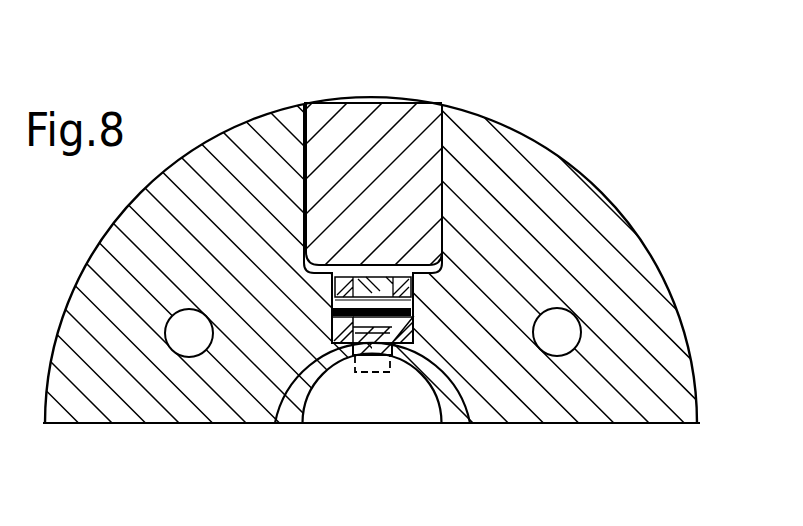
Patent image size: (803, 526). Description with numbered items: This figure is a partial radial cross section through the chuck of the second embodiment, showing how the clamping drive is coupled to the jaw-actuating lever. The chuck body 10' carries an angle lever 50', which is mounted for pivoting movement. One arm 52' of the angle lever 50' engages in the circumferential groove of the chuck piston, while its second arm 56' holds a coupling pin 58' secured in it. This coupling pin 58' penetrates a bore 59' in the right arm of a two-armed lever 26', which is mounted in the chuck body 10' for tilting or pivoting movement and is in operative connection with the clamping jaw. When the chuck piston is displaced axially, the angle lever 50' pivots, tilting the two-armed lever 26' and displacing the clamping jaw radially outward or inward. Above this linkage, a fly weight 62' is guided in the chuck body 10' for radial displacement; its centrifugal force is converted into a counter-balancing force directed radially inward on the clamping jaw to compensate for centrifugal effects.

The chuck body 10' is at (401, 220).
The fly weight 62' is at (347, 220).
The two-armed lever 26' is at (434, 173).
The angle lever 50' is at (518, 261).
The arm of angle lever 52' is at (374, 423).
The second arm of angle lever 56' is at (319, 410).
The coupling pin 58' is at (263, 410).
The bore 59' is at (359, 410).